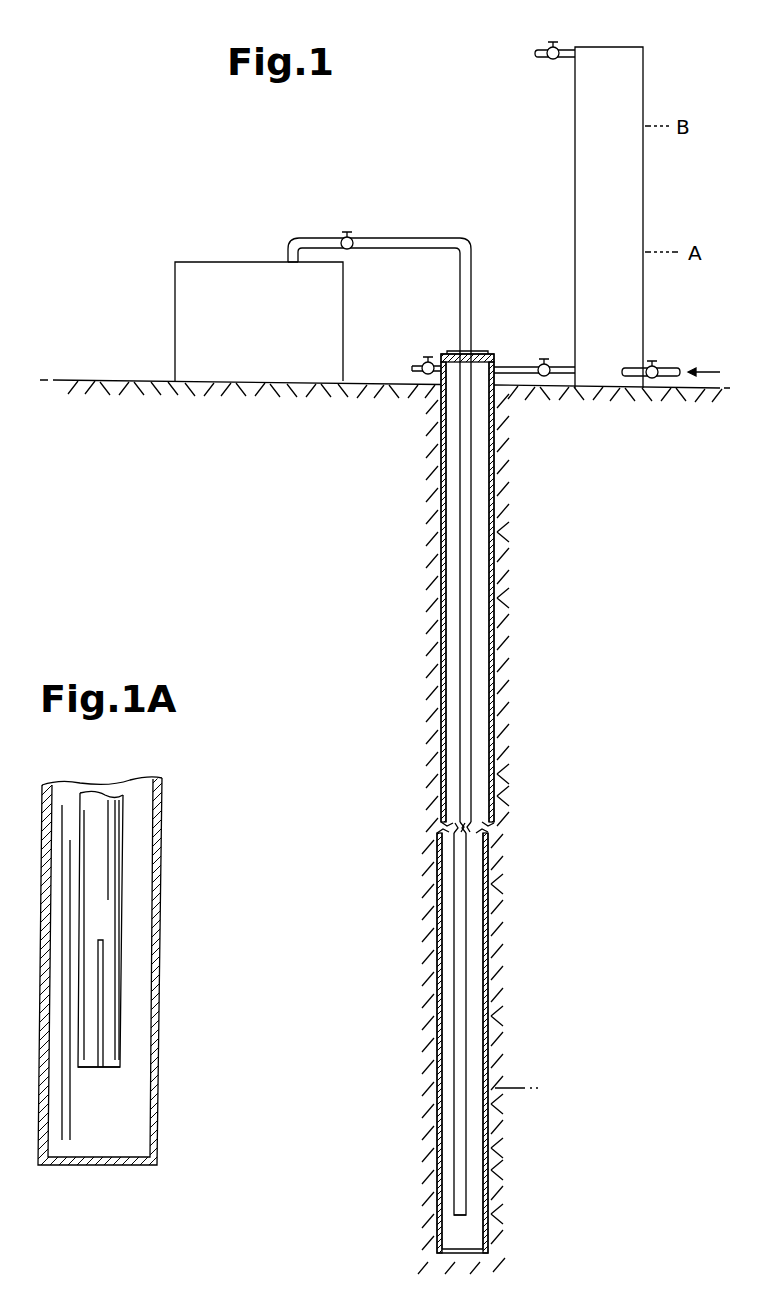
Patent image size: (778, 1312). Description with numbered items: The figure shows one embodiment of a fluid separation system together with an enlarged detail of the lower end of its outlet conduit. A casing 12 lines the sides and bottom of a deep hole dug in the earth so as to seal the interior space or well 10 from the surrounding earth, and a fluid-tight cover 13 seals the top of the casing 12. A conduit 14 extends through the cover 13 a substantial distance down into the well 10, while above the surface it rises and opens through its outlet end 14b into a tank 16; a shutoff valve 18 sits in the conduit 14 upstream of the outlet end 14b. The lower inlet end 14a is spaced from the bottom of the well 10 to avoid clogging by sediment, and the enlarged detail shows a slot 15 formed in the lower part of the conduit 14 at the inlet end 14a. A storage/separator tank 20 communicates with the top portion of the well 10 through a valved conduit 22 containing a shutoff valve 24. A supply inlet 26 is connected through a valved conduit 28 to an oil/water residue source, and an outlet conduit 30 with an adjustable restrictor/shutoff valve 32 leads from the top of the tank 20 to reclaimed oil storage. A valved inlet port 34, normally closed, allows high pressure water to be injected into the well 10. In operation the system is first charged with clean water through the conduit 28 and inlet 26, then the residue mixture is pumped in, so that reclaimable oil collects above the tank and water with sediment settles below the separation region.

In FIG. 1, the well 10 is at (514, 803).
In FIG. 1, the casing 12 is at (497, 599).
In FIG. 1A, the casing 12 is at (160, 821).
In FIG. 1, the cover 13 is at (450, 352).
In FIG. 1, the conduit 14 is at (472, 791).
In FIG. 1A, the conduit 14 is at (149, 940).
In FIG. 1, the inlet end 14a is at (484, 1216).
In FIG. 1A, the inlet end 14a is at (112, 1068).
In FIG. 1, the outlet end 14b is at (292, 258).
In FIG. 1A, the slot 15 is at (104, 976).
In FIG. 1, the tank 16 is at (176, 324).
In FIG. 1, the shutoff valve 18 is at (352, 237).
In FIG. 1, the storage/separator tank 20 is at (645, 197).
In FIG. 1, the valved conduit 22 is at (513, 366).
In FIG. 1, the shutoff valve 24 is at (546, 364).
In FIG. 1, the supply inlet 26 is at (643, 368).
In FIG. 1, the valved conduit 28 is at (660, 368).
In FIG. 1, the outlet conduit 30 is at (541, 58).
In FIG. 1, the adjustable restrictor/shutoff valve 32 is at (557, 46).
In FIG. 1, the valved inlet port 34 is at (424, 362).